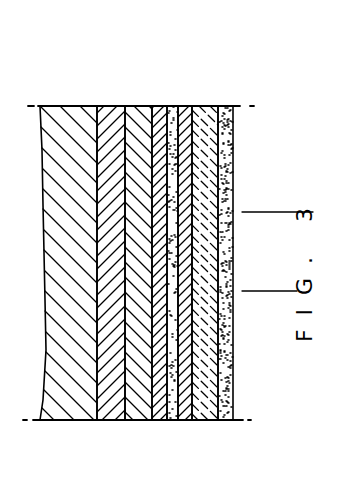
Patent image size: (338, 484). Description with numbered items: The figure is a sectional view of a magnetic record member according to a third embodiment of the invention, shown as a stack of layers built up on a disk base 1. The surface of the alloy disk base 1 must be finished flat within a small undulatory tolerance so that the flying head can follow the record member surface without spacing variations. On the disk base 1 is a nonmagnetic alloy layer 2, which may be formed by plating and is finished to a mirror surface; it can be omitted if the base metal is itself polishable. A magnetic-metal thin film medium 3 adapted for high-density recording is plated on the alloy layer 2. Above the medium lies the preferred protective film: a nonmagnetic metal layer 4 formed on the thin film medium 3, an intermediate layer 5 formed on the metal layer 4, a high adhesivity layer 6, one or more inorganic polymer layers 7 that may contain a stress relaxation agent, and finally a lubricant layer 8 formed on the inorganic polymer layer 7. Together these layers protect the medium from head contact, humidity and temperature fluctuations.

The disk base 1 is at (64, 112).
The alloy layer 2 is at (108, 110).
The magnetic-metal thin film medium 3 is at (138, 108).
The nonmagnetic metal layer 4 is at (155, 107).
The intermediate layer 5 is at (175, 105).
The high adhesivity layer 6 is at (185, 105).
The inorganic polymer layer 7 is at (210, 105).
The lubricant layer 8 is at (232, 105).